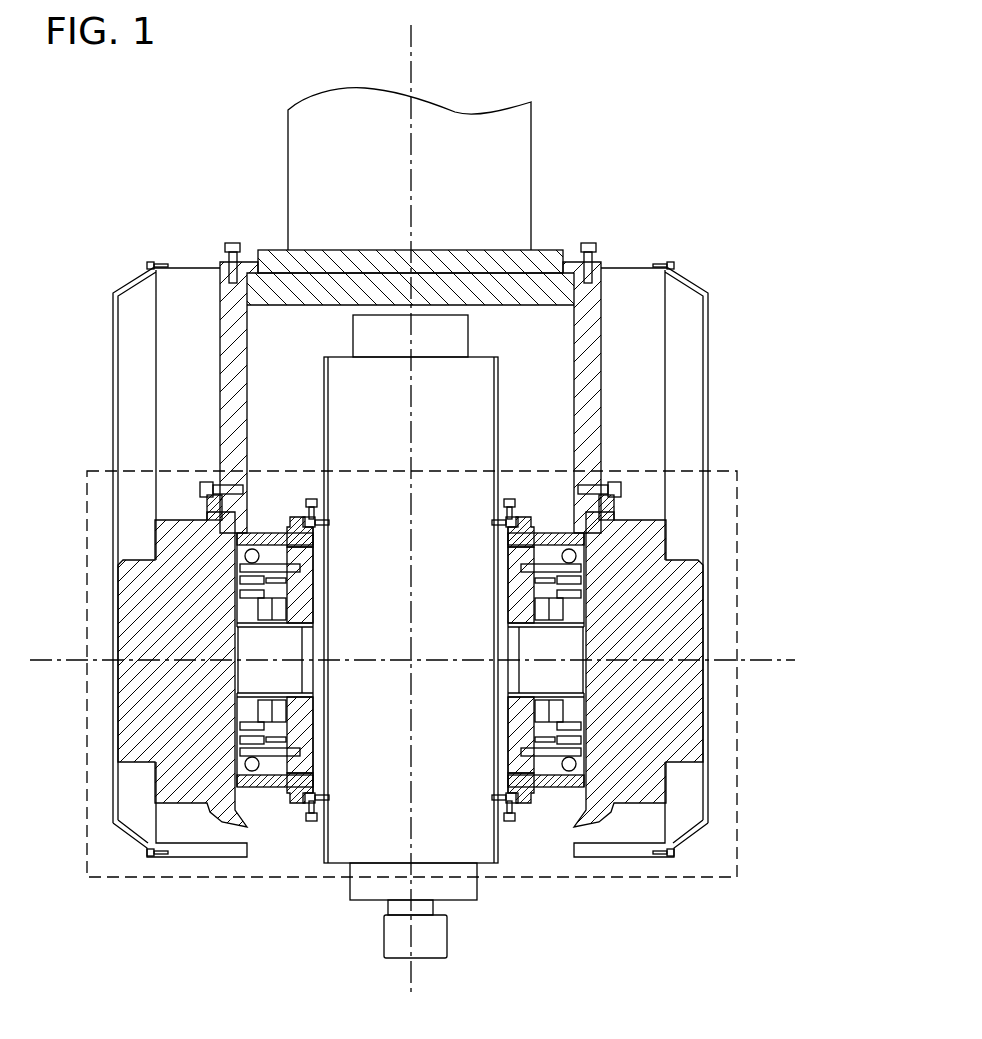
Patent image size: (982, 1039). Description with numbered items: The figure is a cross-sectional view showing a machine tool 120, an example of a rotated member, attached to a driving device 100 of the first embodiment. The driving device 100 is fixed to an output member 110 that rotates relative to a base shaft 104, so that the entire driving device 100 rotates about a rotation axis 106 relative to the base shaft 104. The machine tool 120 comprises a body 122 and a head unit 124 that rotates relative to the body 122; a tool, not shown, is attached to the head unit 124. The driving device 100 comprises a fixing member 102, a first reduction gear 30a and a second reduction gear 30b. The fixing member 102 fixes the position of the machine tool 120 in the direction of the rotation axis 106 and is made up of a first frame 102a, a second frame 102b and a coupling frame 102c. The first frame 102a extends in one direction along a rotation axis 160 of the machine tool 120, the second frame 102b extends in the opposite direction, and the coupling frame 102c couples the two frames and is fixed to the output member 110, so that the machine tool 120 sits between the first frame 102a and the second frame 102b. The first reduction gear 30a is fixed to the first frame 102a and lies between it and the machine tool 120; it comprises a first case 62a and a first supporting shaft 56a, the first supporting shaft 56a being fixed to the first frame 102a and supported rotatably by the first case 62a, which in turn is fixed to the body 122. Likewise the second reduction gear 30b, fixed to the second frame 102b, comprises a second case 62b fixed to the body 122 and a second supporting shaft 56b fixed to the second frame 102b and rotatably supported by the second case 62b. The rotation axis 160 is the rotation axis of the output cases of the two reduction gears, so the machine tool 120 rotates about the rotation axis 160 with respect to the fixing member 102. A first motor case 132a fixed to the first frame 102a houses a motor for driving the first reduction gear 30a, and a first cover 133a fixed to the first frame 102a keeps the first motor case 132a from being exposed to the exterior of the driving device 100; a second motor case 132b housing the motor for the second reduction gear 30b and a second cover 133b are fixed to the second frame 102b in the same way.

The driving device 100 is at (680, 225).
The fixing member 102 is at (412, 360).
The first frame 102a is at (677, 388).
The second frame 102b is at (231, 403).
The coupling frame 102c is at (547, 288).
The base shaft 104 is at (518, 162).
The rotation axis 106 is at (411, 50).
The output member 110 is at (275, 263).
The machine tool 120 is at (548, 611).
The body 122 is at (488, 393).
The head unit 124 is at (432, 943).
The first motor case 132a is at (695, 738).
The second motor case 132b is at (133, 738).
The first cover 133a is at (710, 447).
The second cover 133b is at (112, 446).
The first supporting shaft 56a is at (612, 518).
The second supporting shaft 56b is at (235, 505).
The first case 62a is at (585, 525).
The second case 62b is at (262, 527).
The first reduction gear 30a is at (541, 839).
The second reduction gear 30b is at (288, 841).
The rotation axis 160 is at (765, 663).